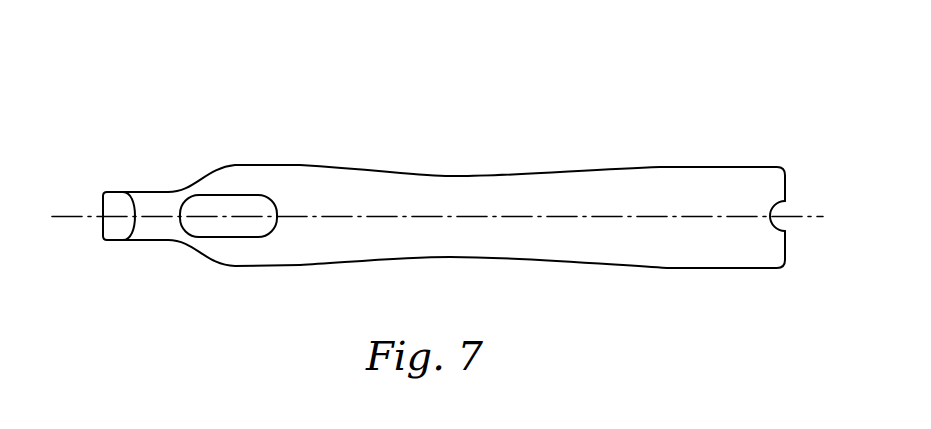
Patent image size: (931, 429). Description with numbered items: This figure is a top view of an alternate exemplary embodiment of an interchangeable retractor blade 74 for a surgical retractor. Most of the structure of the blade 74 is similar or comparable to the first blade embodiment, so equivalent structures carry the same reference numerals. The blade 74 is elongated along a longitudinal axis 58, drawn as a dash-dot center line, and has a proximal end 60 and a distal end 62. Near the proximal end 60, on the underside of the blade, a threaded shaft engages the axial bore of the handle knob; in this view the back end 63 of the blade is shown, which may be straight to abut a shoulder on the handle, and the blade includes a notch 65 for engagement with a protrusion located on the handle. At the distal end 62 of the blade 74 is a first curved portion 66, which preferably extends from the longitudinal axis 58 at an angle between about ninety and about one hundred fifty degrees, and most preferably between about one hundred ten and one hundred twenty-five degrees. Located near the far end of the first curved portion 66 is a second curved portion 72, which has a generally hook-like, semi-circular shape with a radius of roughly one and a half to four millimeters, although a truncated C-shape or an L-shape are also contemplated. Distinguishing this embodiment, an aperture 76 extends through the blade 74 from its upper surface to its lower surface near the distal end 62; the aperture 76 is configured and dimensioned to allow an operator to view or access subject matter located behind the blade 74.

The longitudinal axis 58 is at (73, 214).
The proximal end 60 is at (765, 143).
The distal end 62 is at (223, 277).
The back end 63 is at (785, 247).
The notch 65 is at (780, 210).
The first curved portion 66 is at (140, 242).
The second curved portion 72 is at (112, 190).
The interchangeable retractor blade 74 is at (170, 131).
The aperture 76 is at (239, 194).